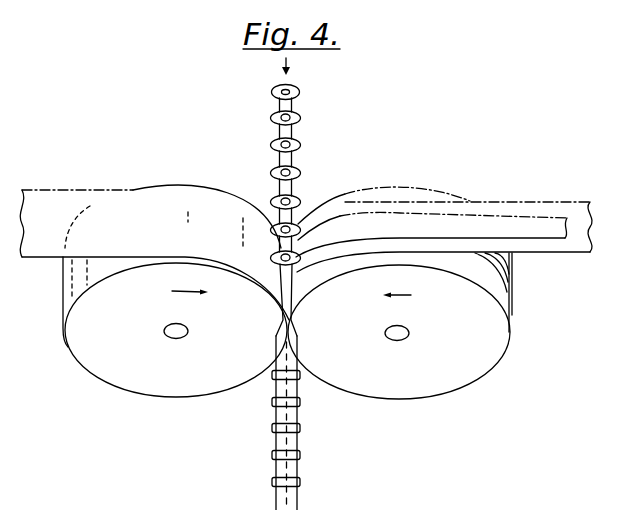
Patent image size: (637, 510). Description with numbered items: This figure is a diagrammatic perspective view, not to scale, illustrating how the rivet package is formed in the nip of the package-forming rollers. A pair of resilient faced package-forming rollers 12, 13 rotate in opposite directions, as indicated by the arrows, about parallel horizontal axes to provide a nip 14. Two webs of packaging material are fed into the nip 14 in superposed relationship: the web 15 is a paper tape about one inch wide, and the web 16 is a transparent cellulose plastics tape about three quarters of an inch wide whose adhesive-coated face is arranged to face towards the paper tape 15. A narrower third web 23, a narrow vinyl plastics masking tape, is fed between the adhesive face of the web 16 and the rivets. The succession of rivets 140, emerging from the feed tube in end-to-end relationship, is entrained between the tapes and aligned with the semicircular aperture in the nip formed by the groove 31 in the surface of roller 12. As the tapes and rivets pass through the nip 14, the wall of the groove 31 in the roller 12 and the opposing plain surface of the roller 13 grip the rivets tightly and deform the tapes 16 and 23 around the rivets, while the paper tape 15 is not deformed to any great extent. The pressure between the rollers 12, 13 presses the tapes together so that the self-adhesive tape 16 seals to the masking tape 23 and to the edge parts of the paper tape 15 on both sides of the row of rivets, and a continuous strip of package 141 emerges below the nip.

The package-forming roller 12 is at (436, 387).
The package-forming roller 13 is at (176, 388).
The nip 14 is at (290, 331).
The web 15 is at (90, 190).
The web 16 is at (491, 203).
The third web 23 is at (535, 220).
The groove 31 is at (505, 278).
The succession of rivets 140 is at (305, 143).
The continuous strip of package 141 is at (341, 456).